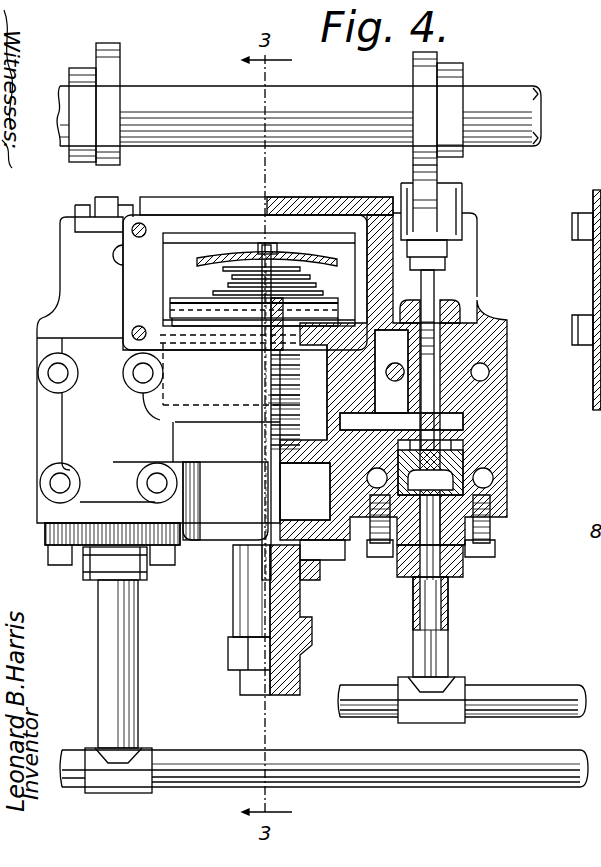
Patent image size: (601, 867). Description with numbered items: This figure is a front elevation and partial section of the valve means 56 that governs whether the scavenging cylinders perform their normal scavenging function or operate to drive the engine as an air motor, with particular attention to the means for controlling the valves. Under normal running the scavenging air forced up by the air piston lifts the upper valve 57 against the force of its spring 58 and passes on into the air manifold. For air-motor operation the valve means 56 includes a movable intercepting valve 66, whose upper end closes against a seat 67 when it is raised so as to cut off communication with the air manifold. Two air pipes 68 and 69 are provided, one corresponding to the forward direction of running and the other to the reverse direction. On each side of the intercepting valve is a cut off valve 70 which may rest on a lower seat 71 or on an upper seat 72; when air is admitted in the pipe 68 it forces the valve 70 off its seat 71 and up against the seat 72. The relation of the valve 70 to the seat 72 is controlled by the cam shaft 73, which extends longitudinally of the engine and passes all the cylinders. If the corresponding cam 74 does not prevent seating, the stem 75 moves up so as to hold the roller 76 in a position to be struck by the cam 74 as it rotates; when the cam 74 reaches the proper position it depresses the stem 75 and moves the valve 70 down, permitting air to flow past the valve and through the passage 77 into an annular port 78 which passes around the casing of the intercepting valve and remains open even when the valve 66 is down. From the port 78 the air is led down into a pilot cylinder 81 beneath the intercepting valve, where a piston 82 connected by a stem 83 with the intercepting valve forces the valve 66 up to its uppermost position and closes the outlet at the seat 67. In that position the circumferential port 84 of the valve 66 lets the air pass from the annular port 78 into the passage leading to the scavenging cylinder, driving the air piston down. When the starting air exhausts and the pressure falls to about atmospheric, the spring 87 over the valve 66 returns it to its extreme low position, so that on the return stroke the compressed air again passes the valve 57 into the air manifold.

The cam shaft 73 is at (512, 97).
The cam 74 is at (114, 58).
The roller 76 is at (430, 195).
The stem 75 is at (434, 285).
The upper valve 57 is at (182, 300).
The spring 58 is at (238, 280).
The seat 67 is at (362, 302).
The spring 87 is at (271, 372).
The circumferential port 84 is at (375, 360).
The annular port 78 is at (268, 400).
The upper seat 72 is at (466, 440).
The cut off valve 70 is at (465, 470).
The intercepting valve 66 is at (323, 452).
The passage 77 is at (345, 486).
The stem 83 is at (268, 510).
The piston 82 is at (320, 570).
The pilot cylinder 81 is at (312, 615).
The lower seat 71 is at (468, 550).
The valve means 56 is at (121, 658).
The air pipe 68 is at (506, 690).
The air pipe 69 is at (522, 760).